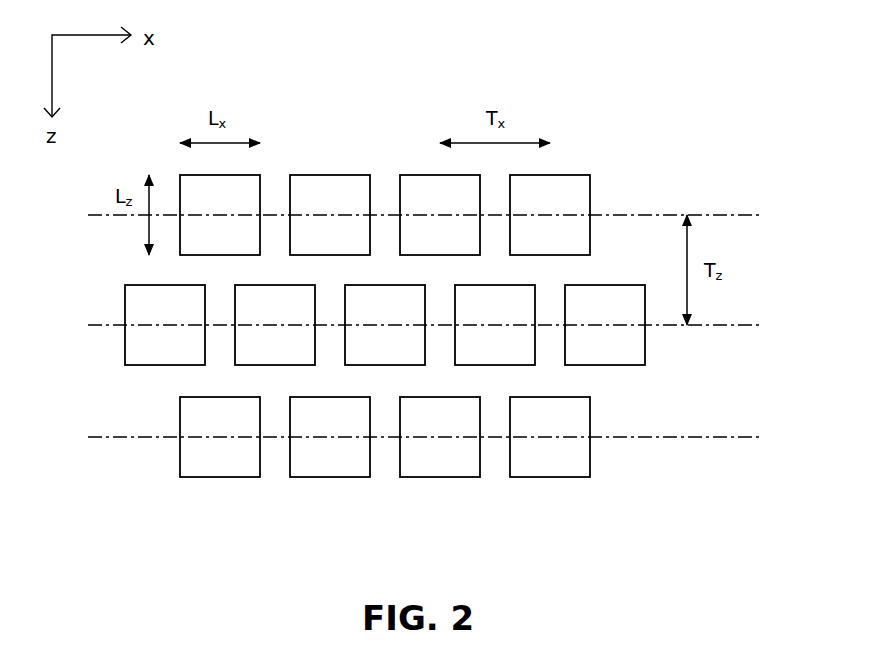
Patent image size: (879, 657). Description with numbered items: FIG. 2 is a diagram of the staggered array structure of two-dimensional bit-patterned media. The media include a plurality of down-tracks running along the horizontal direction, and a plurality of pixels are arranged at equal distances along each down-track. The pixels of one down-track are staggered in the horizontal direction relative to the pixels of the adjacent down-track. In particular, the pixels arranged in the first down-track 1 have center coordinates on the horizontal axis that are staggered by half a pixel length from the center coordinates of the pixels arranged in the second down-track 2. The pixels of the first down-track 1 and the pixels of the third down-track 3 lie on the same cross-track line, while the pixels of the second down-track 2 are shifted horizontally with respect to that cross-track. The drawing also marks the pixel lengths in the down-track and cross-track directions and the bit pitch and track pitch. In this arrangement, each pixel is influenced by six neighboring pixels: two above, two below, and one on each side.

The first down-track 1 is at (442, 215).
The second down-track 2 is at (442, 325).
The third down-track 3 is at (442, 437).